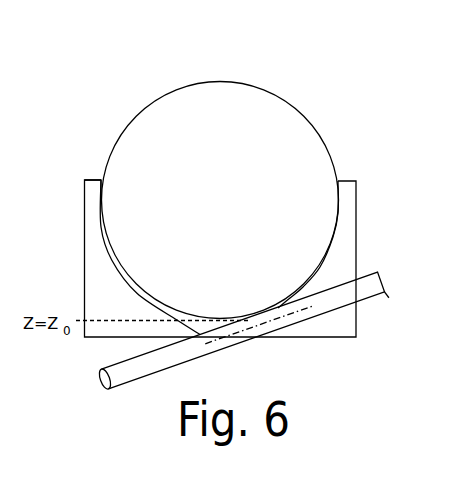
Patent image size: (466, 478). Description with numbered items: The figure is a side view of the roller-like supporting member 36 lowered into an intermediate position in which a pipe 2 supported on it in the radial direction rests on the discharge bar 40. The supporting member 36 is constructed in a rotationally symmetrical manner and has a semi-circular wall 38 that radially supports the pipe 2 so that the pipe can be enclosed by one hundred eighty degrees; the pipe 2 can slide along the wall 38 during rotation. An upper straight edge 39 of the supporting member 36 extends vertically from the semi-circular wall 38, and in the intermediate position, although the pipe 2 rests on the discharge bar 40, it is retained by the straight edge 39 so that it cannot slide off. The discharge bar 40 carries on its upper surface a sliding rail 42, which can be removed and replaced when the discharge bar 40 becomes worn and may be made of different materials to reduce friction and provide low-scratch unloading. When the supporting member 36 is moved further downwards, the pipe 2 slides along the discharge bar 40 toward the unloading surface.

The pipe 2 is at (260, 88).
The supporting member 36 is at (334, 90).
The semi-circular wall 38 is at (121, 268).
The upper straight edge 39 is at (110, 187).
The discharge bar 40 is at (320, 303).
The sliding rail 42 is at (328, 291).